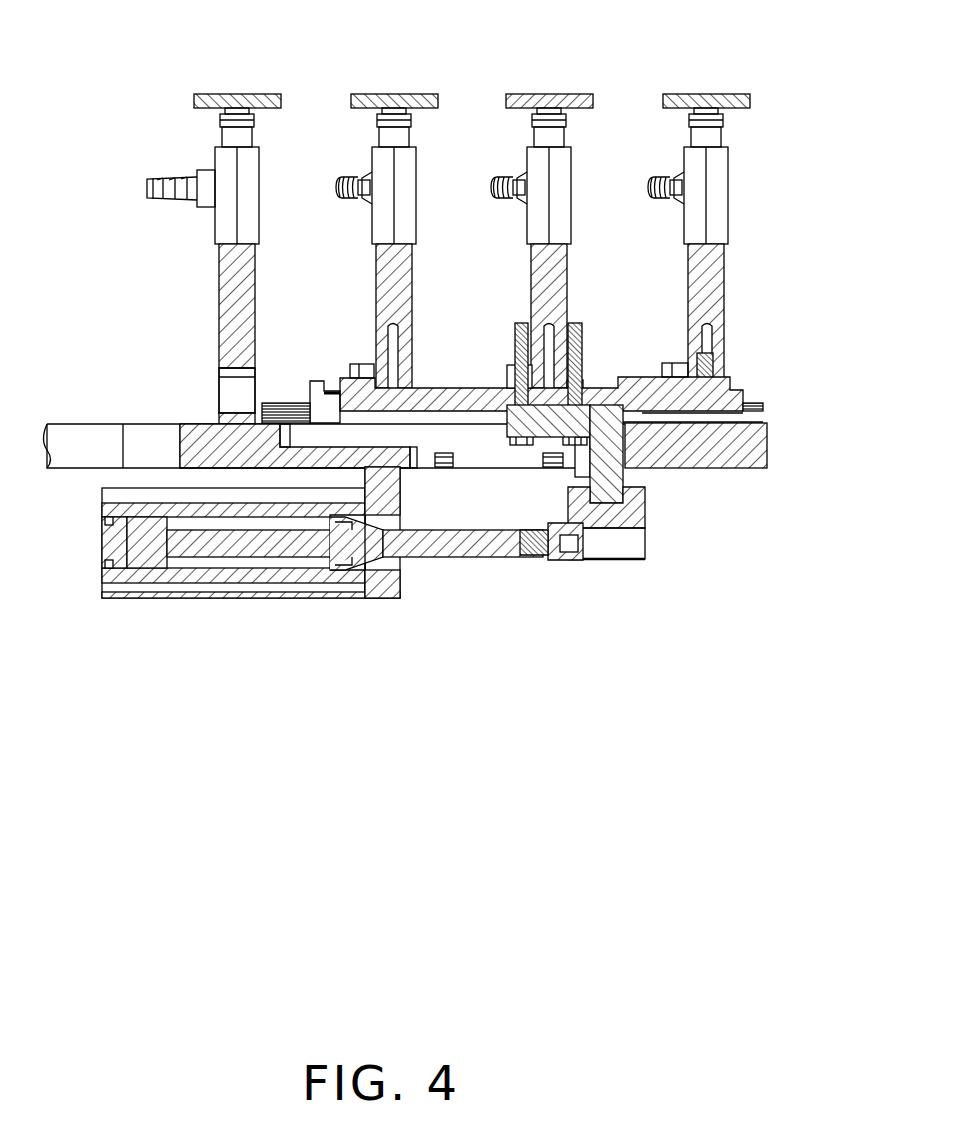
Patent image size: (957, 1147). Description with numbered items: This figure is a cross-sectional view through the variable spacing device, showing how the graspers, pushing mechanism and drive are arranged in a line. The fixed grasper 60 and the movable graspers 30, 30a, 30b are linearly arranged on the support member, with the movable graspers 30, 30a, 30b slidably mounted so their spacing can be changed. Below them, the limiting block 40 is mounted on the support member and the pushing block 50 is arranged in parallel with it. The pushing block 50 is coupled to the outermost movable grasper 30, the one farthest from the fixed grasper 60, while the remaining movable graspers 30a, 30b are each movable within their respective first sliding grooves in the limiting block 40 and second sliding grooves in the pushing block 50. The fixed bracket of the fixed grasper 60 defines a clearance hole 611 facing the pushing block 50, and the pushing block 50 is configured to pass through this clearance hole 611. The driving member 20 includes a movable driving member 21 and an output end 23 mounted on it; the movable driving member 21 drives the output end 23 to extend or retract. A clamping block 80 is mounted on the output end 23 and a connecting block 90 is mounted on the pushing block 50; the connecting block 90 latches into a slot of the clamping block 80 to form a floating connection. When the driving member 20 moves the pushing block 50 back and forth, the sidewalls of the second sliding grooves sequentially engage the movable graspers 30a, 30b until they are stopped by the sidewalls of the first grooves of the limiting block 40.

The driving member 20 is at (455, 650).
The movable driving member 21 is at (343, 593).
The output end 23 is at (487, 545).
The movable grasper 30 is at (697, 168).
The movable grasper 30a is at (388, 162).
The movable grasper 30b is at (541, 165).
The limiting block 40 is at (320, 393).
The pushing block 50 is at (365, 388).
The fixed grasper 60 is at (235, 308).
The clearance hole 611 is at (236, 394).
The clamping block 80 is at (627, 517).
The connecting block 90 is at (612, 485).